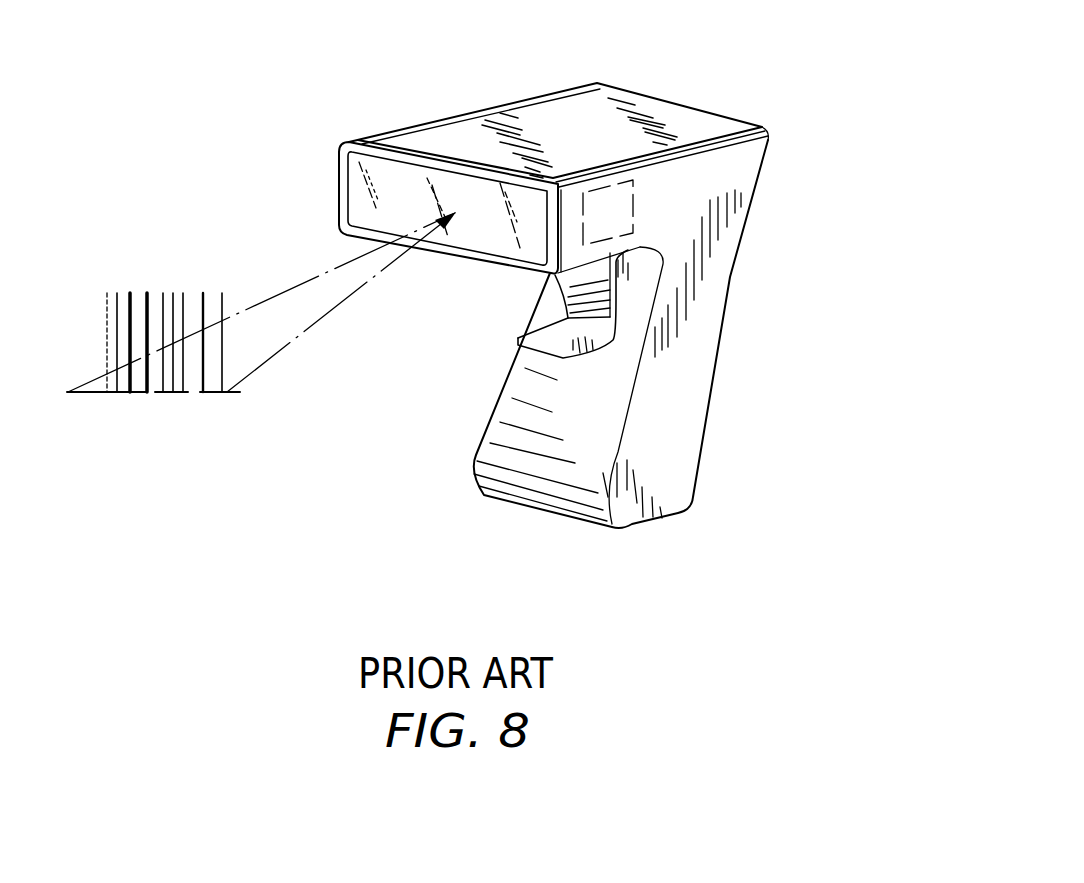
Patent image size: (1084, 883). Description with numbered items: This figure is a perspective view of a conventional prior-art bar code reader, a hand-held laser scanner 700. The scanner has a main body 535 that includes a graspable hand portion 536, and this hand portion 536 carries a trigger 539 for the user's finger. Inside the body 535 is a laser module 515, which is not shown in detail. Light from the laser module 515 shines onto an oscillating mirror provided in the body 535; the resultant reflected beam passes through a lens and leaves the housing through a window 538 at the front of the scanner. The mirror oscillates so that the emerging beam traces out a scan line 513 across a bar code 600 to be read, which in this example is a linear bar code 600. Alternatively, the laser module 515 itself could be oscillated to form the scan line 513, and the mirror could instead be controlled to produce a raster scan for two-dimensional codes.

The hand-held laser scanner 700 is at (776, 89).
The laser module 515 is at (633, 204).
The main body 535 is at (733, 235).
The window 538 is at (363, 205).
The trigger 539 is at (522, 346).
The graspable hand portion 536 is at (553, 482).
The bar code 600 is at (107, 334).
The scan line 513 is at (253, 392).